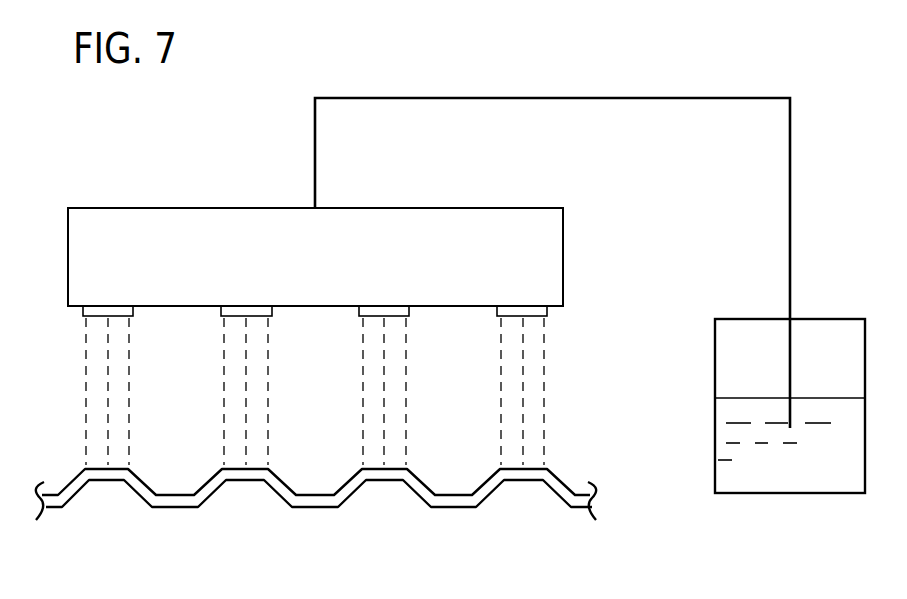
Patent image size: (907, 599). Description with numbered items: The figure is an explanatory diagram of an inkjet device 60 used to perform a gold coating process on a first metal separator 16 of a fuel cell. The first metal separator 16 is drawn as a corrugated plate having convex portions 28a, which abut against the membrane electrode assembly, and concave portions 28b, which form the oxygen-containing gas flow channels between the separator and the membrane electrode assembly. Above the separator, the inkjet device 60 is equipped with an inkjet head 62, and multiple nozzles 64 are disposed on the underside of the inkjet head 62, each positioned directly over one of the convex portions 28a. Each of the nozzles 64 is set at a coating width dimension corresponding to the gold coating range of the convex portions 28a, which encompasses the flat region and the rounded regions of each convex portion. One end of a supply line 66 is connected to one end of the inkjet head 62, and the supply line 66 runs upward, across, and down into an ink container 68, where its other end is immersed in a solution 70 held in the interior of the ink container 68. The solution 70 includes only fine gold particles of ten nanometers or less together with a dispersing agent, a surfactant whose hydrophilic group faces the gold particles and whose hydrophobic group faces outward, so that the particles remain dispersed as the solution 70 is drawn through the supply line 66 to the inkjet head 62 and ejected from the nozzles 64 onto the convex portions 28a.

The first metal separator 16 is at (577, 517).
The convex portions 28a is at (385, 480).
The concave portions 28b is at (457, 507).
The inkjet device 60 is at (164, 123).
The inkjet head 62 is at (239, 203).
The nozzles 64 is at (398, 306).
The supply line 66 is at (655, 97).
The ink container 68 is at (745, 318).
The solution 70 is at (732, 474).